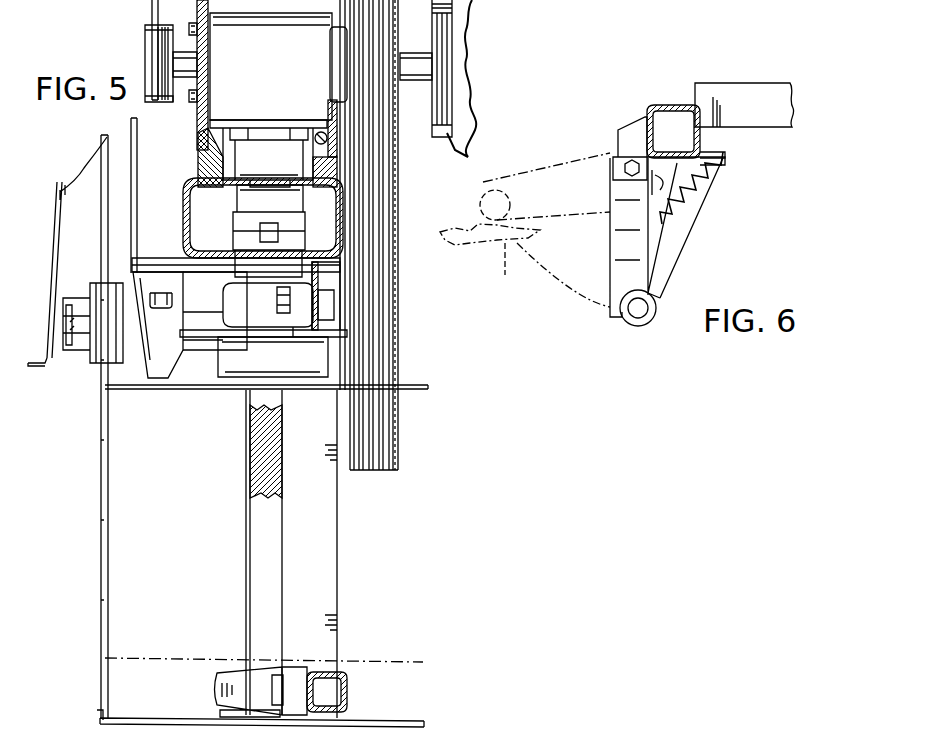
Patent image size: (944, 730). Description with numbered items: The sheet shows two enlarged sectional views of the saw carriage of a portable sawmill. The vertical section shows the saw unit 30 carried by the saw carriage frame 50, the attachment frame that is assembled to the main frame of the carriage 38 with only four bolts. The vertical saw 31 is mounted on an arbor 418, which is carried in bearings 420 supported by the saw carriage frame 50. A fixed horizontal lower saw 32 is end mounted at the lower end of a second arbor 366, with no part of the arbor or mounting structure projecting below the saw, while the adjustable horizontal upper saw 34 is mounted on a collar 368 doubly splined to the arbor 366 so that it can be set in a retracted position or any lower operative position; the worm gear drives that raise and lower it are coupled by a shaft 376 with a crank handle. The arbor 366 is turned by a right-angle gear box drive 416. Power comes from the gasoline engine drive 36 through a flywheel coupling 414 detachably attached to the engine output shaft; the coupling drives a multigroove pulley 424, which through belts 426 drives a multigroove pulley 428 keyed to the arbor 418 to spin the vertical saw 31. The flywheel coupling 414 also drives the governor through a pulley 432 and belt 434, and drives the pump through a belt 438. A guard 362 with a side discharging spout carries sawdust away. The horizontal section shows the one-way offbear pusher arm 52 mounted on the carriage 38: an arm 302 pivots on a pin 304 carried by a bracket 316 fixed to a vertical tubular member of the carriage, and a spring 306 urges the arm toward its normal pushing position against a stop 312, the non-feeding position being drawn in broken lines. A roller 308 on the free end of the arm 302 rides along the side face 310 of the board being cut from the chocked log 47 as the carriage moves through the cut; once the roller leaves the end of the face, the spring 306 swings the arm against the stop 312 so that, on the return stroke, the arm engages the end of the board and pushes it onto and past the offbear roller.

In FIG. 5, the vertical saw 31 is at (108, 505).
In FIG. 5, the lower saw 32 is at (400, 719).
In FIG. 5, the upper saw 34 is at (372, 658).
In FIG. 5, the gasoline engine drive 36 is at (480, 68).
In FIG. 5, the saw unit 30 is at (428, 357).
In FIG. 5, the guard 362 is at (52, 365).
In FIG. 5, the belt 434 is at (150, 12).
In FIG. 5, the pulley 432 is at (147, 58).
In FIG. 5, the belt 438 is at (167, 102).
In FIG. 5, the right-angle gear box drive 416 is at (282, 66).
In FIG. 5, the shaft 376 is at (317, 132).
In FIG. 5, the arbor 418 is at (198, 340).
In FIG. 5, the collar 368 is at (305, 377).
In FIG. 5, the bearings 420 is at (158, 362).
In FIG. 5, the arbor 366 is at (247, 520).
In FIG. 5, the saw carriage frame 50 is at (338, 557).
In FIG. 5, the belts 426 is at (390, 307).
In FIG. 5, the multigroove pulley 428 is at (397, 352).
In FIG. 5, the flywheel coupling 414 is at (468, 40).
In FIG. 5, the multigroove pulley 424 is at (470, 20).
In FIG. 6, the carriage 38 is at (712, 81).
In FIG. 6, the bracket 316 is at (640, 115).
In FIG. 6, the pin 304 is at (628, 158).
In FIG. 6, the arm 302 is at (522, 163).
In FIG. 6, the roller 308 is at (485, 188).
In FIG. 6, the side face 310 is at (443, 222).
In FIG. 6, the stop 312 is at (660, 183).
In FIG. 6, the spring 306 is at (690, 193).
In FIG. 6, the offbear pusher arm 52 is at (680, 225).
In FIG. 6, the log 47 is at (505, 260).